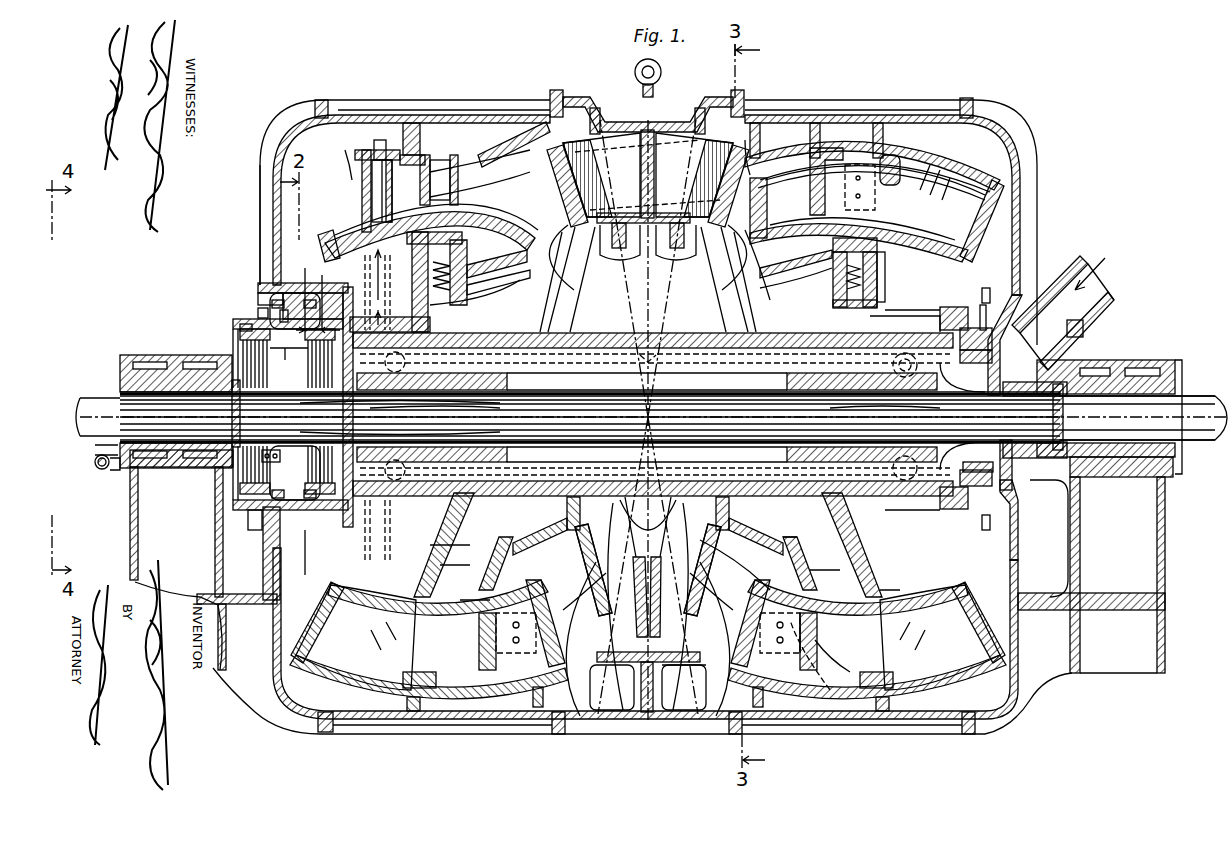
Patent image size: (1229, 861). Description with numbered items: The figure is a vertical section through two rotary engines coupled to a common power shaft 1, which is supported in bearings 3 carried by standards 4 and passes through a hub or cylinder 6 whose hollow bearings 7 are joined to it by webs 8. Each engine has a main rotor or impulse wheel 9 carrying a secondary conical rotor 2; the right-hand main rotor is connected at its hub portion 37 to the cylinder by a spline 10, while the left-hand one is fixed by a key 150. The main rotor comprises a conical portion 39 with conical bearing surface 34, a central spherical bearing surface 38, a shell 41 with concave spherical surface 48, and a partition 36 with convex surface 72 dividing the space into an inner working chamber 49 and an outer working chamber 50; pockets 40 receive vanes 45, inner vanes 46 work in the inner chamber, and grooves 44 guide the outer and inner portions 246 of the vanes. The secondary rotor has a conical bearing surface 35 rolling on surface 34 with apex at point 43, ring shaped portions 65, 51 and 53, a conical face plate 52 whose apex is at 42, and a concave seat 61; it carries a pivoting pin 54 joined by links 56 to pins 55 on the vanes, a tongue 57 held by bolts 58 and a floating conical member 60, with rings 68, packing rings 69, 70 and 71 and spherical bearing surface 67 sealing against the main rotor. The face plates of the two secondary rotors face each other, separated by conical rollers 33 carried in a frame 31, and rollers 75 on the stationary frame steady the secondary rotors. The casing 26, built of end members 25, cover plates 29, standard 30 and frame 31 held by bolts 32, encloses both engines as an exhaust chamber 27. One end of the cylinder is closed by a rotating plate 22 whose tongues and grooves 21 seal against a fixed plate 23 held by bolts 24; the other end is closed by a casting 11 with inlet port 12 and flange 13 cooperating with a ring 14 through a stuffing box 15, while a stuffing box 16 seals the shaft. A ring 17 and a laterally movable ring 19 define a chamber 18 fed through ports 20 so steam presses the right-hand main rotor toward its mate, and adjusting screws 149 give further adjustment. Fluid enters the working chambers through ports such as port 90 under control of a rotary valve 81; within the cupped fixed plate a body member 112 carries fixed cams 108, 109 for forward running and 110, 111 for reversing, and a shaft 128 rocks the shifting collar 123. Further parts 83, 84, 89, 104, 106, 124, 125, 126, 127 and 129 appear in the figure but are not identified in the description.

The power shaft 1 is at (1170, 400).
The secondary conical rotor 2 is at (483, 114).
The bearings 3 is at (120, 382).
The standards 4 is at (130, 550).
The hub or cylinder 6 is at (568, 345).
The hollow bearings 7 is at (548, 350).
The webs 8 is at (555, 390).
The main rotor or impulse wheel 9 is at (672, 427).
The spline 10 is at (935, 330).
The casting 11 is at (1060, 340).
The inlet port 12 is at (1025, 342).
The flange 13 is at (1015, 500).
The ring 14 is at (962, 416).
The stuffing box 15 is at (262, 300).
The stuffing box 16 is at (1025, 386).
The ring 17 is at (990, 330).
The chamber 18 is at (960, 318).
The ring 19 is at (940, 310).
The ports 20 is at (960, 338).
The circular tongues and grooves 21 is at (376, 406).
The plate 22 is at (373, 422).
The fixed plate 23 is at (283, 300).
The bolts 24 is at (268, 288).
The end members 25 is at (268, 112).
The casing 26 is at (260, 168).
The exhaust chamber 27 is at (537, 147).
The cover plates 29 is at (458, 114).
The standard 30 is at (647, 712).
The frame 31 is at (590, 100).
The bolts 32 is at (316, 100).
The conical rollers 33 is at (648, 174).
The conical bearing surface 34 is at (660, 78).
The conical bearing surface 35 is at (450, 548).
The spherical partition 36 is at (750, 290).
The hub portion 37 is at (875, 330).
The central spherical portion or bearing surface 38 is at (643, 380).
The conical portion 39 is at (880, 268).
The pockets 40 is at (345, 238).
The shell 41 is at (540, 135).
The apex point 42 is at (648, 362).
The apex point 43 is at (390, 408).
The grooves 44 is at (508, 150).
The vanes or blades 45 is at (452, 748).
The inner vanes or blades 46 is at (830, 150).
The concave spherical bearing surface 48 is at (475, 177).
The inner working chamber 49 is at (640, 568).
The outer working chamber 50 is at (440, 150).
The ring shaped portion 51 is at (735, 564).
The conical face plate 52 is at (552, 160).
The ring shaped portion 53 is at (679, 567).
The pivoting pin 54 is at (579, 400).
The pins 55 is at (830, 690).
The links 56 is at (657, 607).
The tongue 57 is at (816, 633).
The bolts 58 is at (820, 650).
The floating conical member 60 is at (900, 170).
The concave seat 61 is at (683, 677).
The ring shaped portion 65 is at (465, 250).
The spherical bearing surface 67 is at (815, 280).
The rings 68 is at (832, 252).
The packing rings 69 is at (716, 690).
The packing rings 70 is at (905, 243).
The packing rings 71 is at (877, 286).
The convex bearing surface 72 is at (688, 585).
The wheels or rollers 75 is at (657, 575).
The rotary valve 81 is at (362, 185).
The bolt 83 is at (378, 150).
The rod 84 is at (390, 140).
The bolt hole 89 is at (918, 364).
The port 90 is at (386, 195).
The slip ring housing 104 is at (320, 398).
The housing wall 106 is at (355, 400).
The fixed cam 108 is at (295, 319).
The fixed cam 109 is at (287, 354).
The fixed cam 110 is at (262, 314).
The fixed cam 111 is at (240, 330).
The body member 112 is at (270, 300).
The shifting collar 123 is at (295, 475).
The collar 124 is at (238, 352).
The lead 125 is at (268, 462).
The bearing 126 is at (118, 395).
The key 127 is at (95, 450).
The shaft 128 is at (98, 466).
The washer 129 is at (118, 466).
The adjusting screws 149 is at (988, 300).
The key 150 is at (390, 318).
The outer and inner portions 246 is at (880, 205).